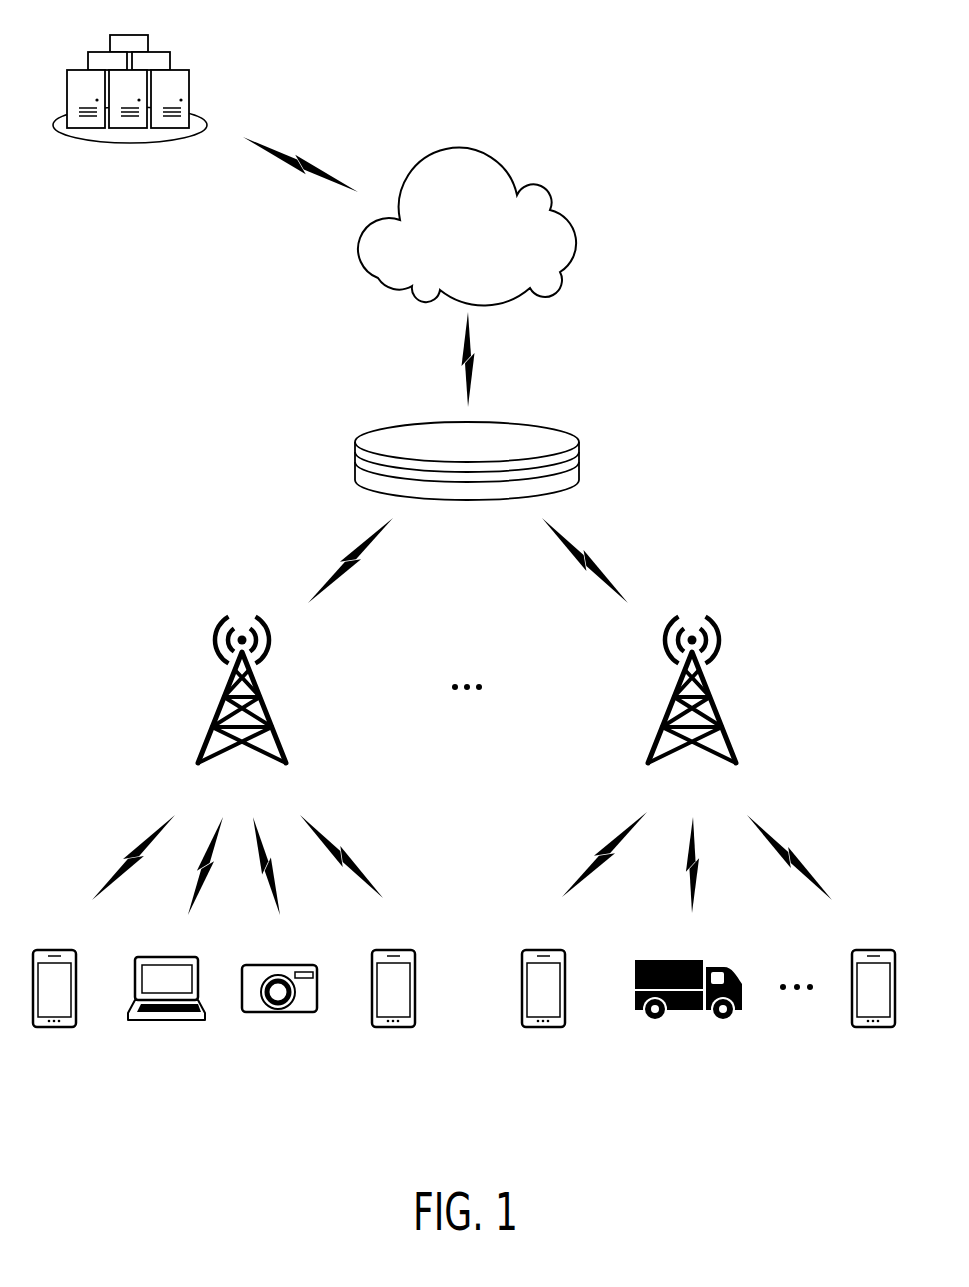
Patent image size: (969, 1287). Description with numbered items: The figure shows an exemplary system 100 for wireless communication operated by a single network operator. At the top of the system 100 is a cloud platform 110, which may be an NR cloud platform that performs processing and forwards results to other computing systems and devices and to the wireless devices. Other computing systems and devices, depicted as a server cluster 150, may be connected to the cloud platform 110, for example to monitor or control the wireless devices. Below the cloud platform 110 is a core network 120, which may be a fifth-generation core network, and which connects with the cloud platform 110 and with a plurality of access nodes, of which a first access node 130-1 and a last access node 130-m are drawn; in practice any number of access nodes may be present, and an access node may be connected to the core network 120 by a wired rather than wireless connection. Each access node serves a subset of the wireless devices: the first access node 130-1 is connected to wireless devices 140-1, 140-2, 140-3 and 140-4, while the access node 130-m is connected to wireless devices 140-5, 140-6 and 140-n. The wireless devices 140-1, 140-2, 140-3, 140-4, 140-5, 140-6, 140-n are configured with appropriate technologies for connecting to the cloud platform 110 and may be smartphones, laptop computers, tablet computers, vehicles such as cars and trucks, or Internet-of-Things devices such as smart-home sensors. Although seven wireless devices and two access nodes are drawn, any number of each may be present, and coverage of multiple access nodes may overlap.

The system 100 is at (728, 92).
The cloud platform 110 is at (578, 238).
The core network 120 is at (579, 443).
The access node 130-1 is at (267, 707).
The access node 130-m is at (717, 707).
The wireless device 140-1 is at (60, 1027).
The wireless device 140-2 is at (178, 1023).
The wireless device 140-3 is at (287, 1013).
The wireless device 140-4 is at (393, 1027).
The wireless device 140-5 is at (550, 1027).
The wireless device 140-6 is at (663, 1017).
The wireless device 140-n is at (877, 1027).
The server cluster 150 is at (170, 63).